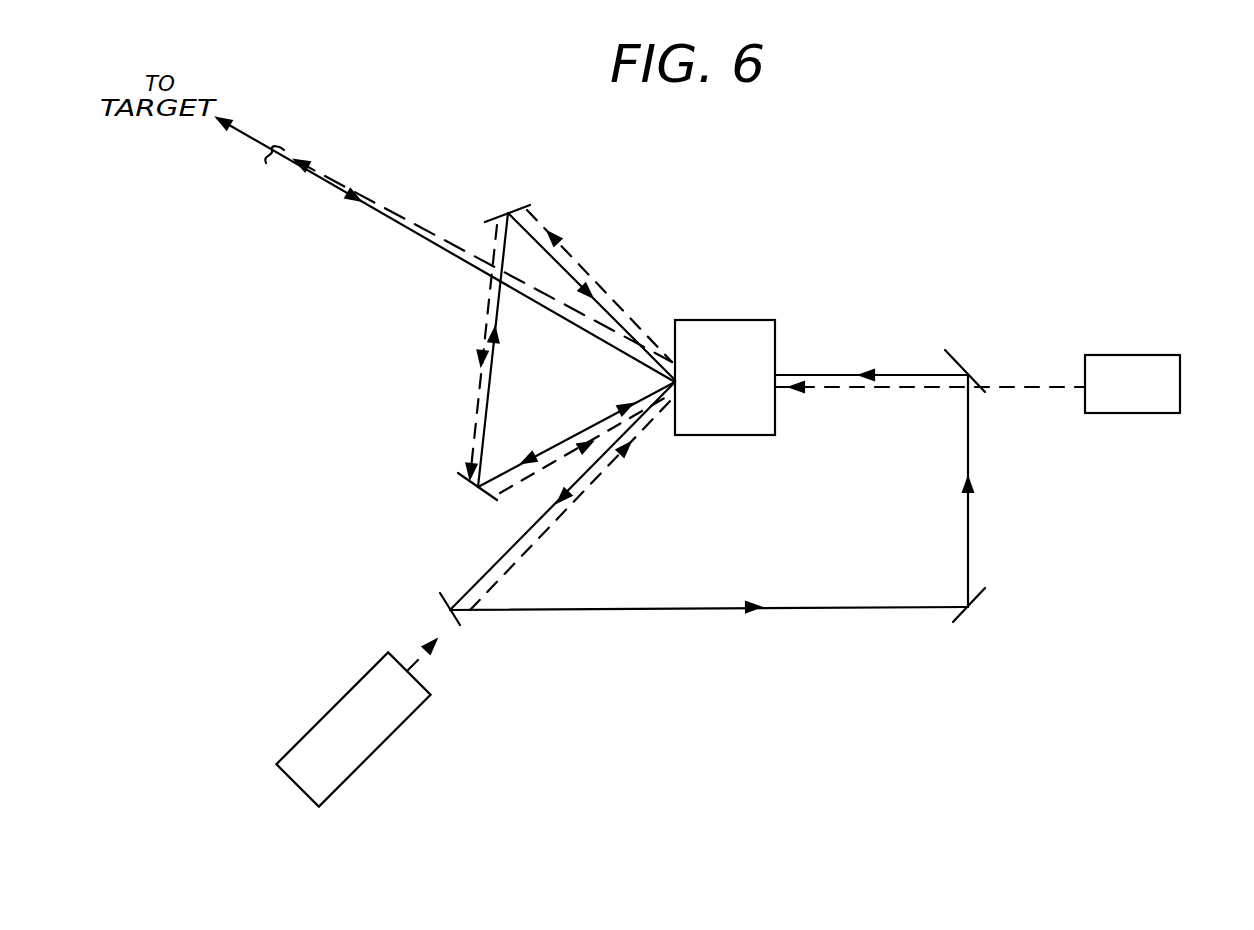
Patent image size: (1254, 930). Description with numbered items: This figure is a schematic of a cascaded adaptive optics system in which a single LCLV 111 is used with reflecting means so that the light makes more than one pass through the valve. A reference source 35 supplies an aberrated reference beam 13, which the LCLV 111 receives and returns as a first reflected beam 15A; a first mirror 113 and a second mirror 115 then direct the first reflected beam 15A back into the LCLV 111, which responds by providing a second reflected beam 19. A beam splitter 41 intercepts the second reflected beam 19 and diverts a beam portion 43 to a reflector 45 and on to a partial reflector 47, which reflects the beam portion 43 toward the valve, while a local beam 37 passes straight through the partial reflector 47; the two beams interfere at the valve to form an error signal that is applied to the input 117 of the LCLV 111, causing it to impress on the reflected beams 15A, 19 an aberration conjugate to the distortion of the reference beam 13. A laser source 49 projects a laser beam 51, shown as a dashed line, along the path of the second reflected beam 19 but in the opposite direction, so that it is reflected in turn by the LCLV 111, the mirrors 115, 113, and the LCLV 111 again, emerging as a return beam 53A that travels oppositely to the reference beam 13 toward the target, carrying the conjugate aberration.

The reference beam 13 is at (366, 210).
The second mirror 115 is at (487, 221).
The first reflected beam 15A is at (562, 266).
The LCLV 111 is at (746, 320).
The input 117 is at (786, 366).
The partial reflector 47 is at (965, 354).
The local beam 37 is at (1050, 386).
The reference source 35 is at (1182, 390).
The first mirror 113 is at (462, 486).
The second reflected beam 19 is at (508, 556).
The return beam 53A is at (556, 522).
The beam splitter 41 is at (441, 604).
The beam portion 43 is at (680, 612).
The reflector 45 is at (986, 594).
The laser beam 51 is at (438, 648).
The laser source 49 is at (403, 736).